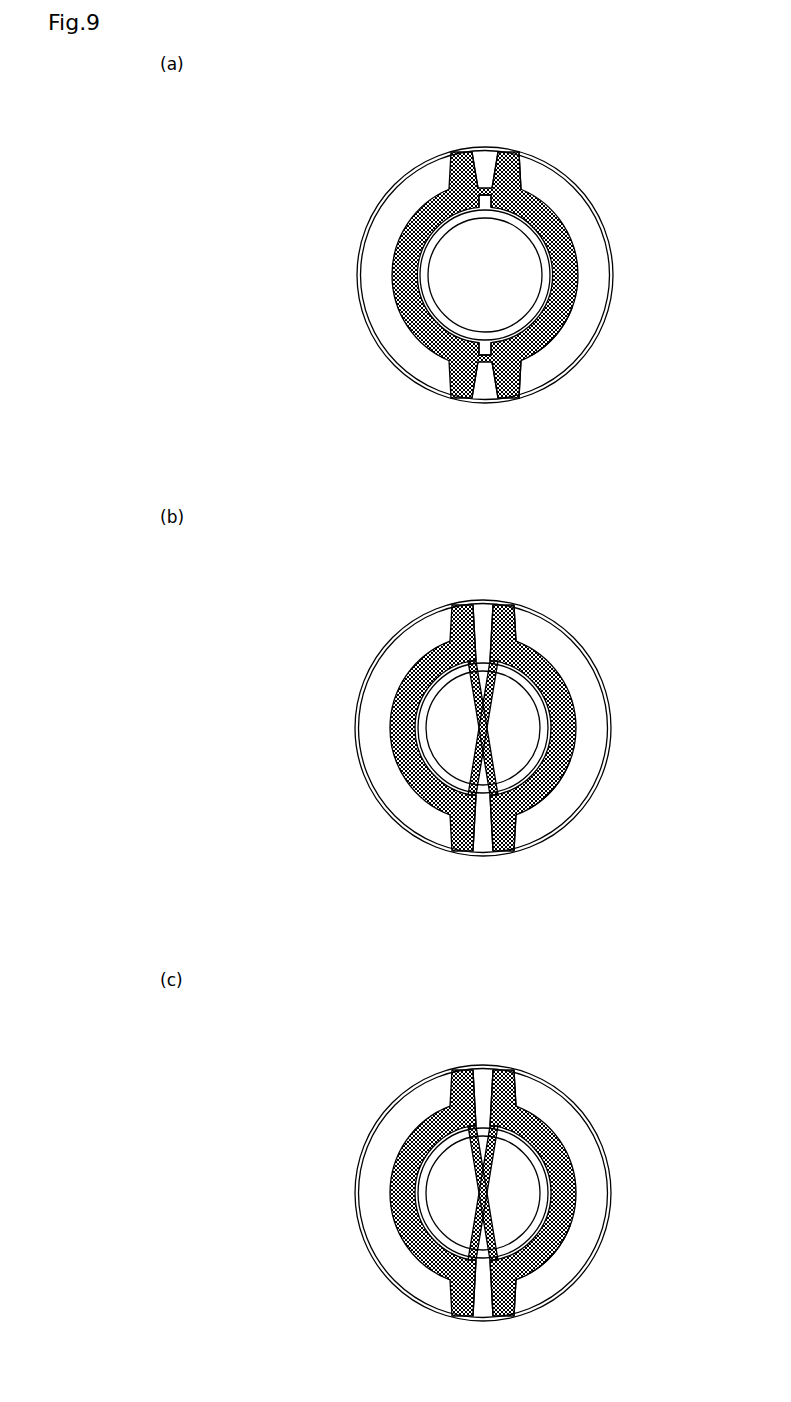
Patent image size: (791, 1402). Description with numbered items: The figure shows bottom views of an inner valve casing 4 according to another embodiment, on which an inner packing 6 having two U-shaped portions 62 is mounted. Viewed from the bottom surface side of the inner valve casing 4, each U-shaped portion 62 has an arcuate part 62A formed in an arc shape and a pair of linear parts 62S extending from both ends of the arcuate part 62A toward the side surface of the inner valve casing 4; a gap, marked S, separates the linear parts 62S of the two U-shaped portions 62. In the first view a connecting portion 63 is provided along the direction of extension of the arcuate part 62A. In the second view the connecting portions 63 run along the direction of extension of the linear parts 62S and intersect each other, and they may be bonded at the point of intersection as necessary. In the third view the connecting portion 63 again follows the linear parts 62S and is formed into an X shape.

The inner valve casing 4 is at (370, 344).
The inner packing 6 is at (417, 202).
The U-shaped portion 62 is at (390, 271).
The arcuate part 62A is at (564, 324).
The linear part 62S is at (517, 176).
The connecting portion 63 is at (480, 187).
The slit S is at (486, 144).